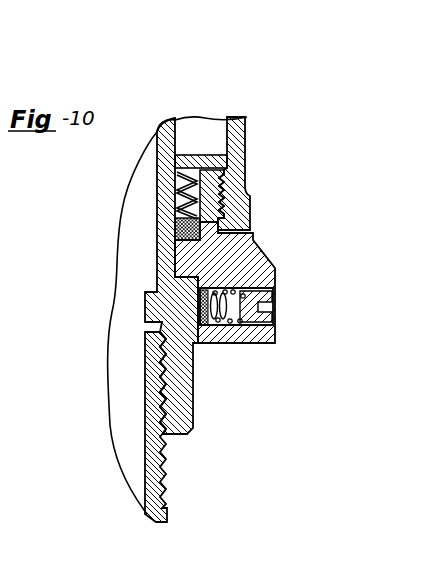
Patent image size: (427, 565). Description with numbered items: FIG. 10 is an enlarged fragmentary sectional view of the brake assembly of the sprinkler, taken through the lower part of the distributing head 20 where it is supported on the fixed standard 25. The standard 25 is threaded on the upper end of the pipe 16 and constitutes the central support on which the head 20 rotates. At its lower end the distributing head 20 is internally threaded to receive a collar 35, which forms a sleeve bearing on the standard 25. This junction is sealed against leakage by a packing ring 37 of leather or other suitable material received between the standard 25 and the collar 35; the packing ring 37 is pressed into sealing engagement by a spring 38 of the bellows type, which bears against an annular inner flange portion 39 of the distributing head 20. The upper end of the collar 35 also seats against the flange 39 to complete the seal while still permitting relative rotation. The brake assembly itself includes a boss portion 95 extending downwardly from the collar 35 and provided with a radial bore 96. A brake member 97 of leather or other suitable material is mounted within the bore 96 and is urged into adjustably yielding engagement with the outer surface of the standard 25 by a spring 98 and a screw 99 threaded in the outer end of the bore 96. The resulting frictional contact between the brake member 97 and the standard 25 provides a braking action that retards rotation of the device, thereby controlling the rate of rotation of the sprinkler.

The pipe 16 is at (164, 489).
The distributing head 20 is at (246, 124).
The fixed standard 25 is at (192, 396).
The collar 35 is at (222, 241).
The packing ring 37 is at (197, 232).
The spring 38 is at (178, 194).
The annular inner flange portion 39 is at (200, 157).
The boss portion 95 is at (276, 278).
The radial bore 96 is at (223, 322).
The brake member 97 is at (202, 306).
The spring 98 is at (247, 322).
The screw 99 is at (274, 320).